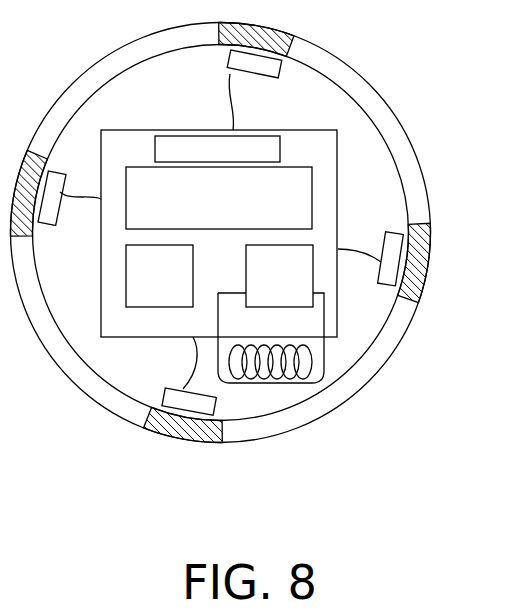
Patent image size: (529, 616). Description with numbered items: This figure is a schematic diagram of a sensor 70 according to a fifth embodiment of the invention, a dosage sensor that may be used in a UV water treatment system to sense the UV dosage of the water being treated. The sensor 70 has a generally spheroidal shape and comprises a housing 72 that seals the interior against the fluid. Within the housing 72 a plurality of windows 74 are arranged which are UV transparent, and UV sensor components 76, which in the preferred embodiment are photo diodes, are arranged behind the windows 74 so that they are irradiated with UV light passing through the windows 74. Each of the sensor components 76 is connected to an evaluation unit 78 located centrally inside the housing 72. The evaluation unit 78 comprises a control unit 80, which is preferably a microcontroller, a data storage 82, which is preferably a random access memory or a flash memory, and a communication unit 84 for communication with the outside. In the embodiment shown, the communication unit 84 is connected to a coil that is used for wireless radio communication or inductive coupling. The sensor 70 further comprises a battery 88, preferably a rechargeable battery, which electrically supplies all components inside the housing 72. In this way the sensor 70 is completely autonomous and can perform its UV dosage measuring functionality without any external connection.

The sensor 70 is at (255, 248).
The housing 72 is at (413, 190).
The windows 74 is at (421, 266).
The UV sensor components 76 is at (385, 283).
The evaluation unit 78 is at (206, 255).
The control unit 80 is at (221, 213).
The data storage 82 is at (172, 286).
The communication unit 84 is at (292, 286).
The battery 88 is at (192, 147).